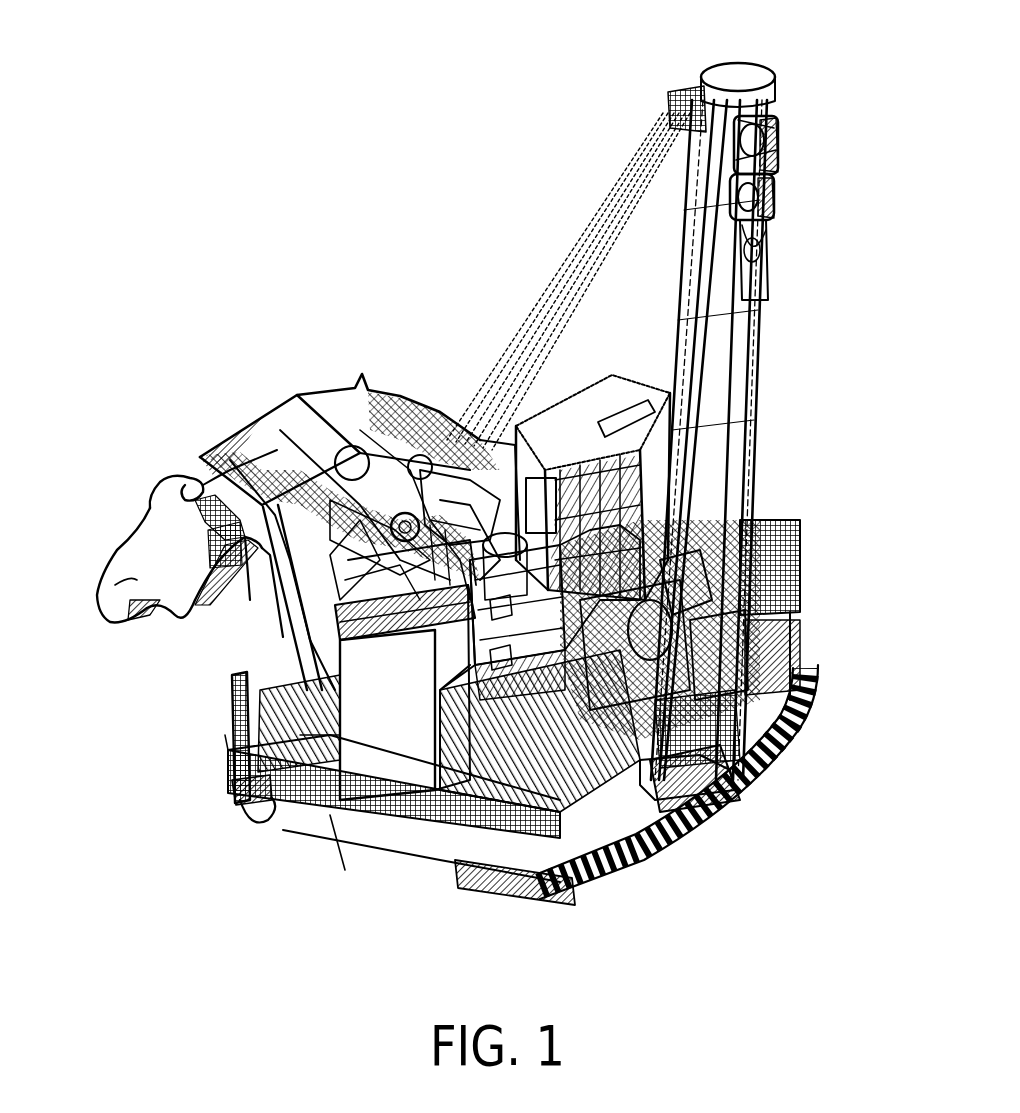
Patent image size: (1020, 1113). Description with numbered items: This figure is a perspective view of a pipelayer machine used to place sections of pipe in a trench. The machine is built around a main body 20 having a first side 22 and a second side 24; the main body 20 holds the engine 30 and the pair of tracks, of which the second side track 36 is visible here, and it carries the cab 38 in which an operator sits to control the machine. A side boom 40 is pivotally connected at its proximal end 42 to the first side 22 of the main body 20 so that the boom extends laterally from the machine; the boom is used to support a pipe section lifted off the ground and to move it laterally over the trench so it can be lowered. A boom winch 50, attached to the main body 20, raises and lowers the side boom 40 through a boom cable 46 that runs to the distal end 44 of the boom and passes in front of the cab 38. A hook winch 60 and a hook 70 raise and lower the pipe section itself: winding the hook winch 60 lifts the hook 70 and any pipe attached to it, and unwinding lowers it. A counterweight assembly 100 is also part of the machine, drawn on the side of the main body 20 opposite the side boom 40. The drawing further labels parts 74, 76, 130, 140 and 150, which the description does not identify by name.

The counterweight assembly 100 is at (160, 445).
The main body 20 is at (445, 831).
The first side 22 is at (690, 831).
The second side 24 is at (265, 713).
The engine 30 is at (382, 741).
The second side track 36 is at (232, 804).
The cab 38 is at (560, 411).
The side boom 40 is at (758, 387).
The proximal end 42 is at (780, 721).
The distal end 44 is at (748, 66).
The boom cable 46 is at (600, 241).
The boom winch 50 is at (300, 421).
The hook winch 60 is at (733, 804).
The hook 70 is at (768, 236).
The upper sheave block 74 is at (780, 144).
The lower sheave block 76 is at (780, 206).
The rotation drive unit 130 is at (690, 592).
The support pad 140 is at (553, 880).
The gripper 150 is at (135, 581).